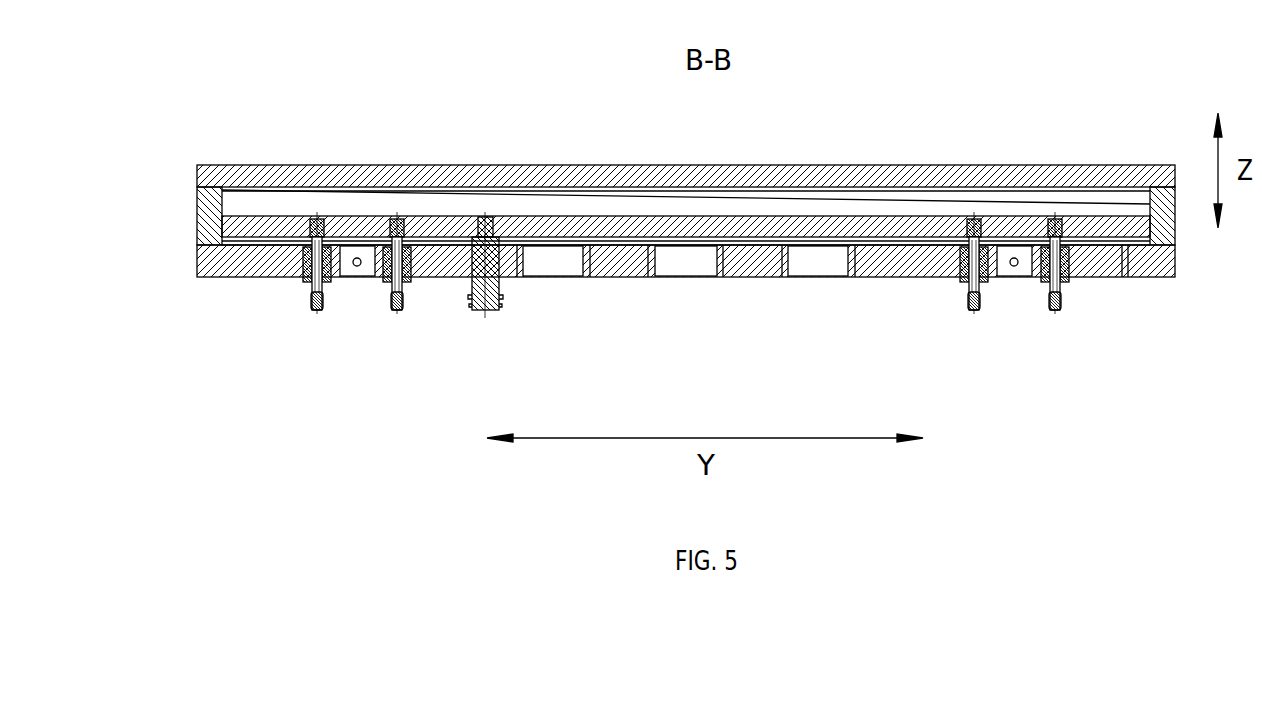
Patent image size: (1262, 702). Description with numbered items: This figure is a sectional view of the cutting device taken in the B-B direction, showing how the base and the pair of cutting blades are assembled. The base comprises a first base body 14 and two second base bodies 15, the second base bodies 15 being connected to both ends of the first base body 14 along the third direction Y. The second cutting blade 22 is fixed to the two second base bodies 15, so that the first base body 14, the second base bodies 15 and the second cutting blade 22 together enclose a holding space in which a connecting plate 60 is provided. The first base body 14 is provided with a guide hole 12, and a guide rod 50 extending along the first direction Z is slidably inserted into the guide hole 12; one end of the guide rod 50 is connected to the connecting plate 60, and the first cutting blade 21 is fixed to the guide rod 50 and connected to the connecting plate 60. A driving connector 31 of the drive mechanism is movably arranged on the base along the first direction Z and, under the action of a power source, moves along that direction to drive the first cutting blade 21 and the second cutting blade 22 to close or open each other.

The guide hole 12 is at (333, 277).
The first base body 14 is at (258, 277).
The second base body 15 is at (197, 223).
The first cutting blade 21 is at (682, 197).
The second cutting blade 22 is at (528, 165).
The driving connector 31 is at (500, 300).
The guide rod 50 is at (327, 305).
The connecting plate 60 is at (442, 217).